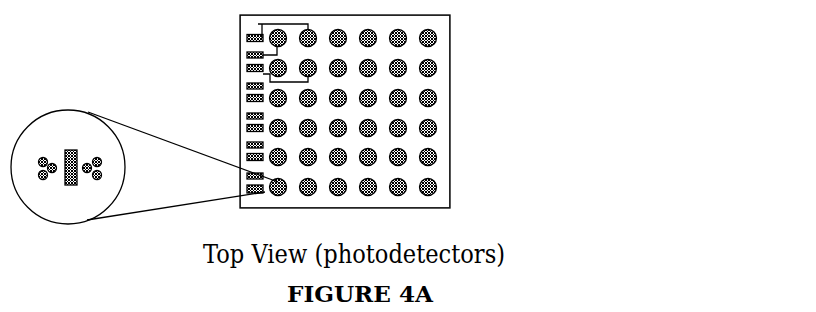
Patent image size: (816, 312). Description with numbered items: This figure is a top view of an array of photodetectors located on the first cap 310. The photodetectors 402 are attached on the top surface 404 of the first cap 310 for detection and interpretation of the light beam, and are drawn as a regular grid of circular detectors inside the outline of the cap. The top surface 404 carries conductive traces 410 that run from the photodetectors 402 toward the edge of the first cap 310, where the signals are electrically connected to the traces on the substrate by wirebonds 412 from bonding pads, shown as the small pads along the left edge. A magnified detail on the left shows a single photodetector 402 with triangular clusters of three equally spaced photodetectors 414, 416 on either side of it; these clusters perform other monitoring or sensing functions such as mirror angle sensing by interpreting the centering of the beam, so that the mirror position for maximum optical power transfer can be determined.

The first cap 310 is at (453, 53).
The photodetector 402 is at (266, 69).
The top surface 404 is at (442, 173).
The conductive traces 410 is at (258, 24).
The wirebonds 412 is at (247, 44).
The photodetectors of triangular cluster 414 is at (43, 157).
The photodetectors of triangular cluster 416 is at (98, 159).